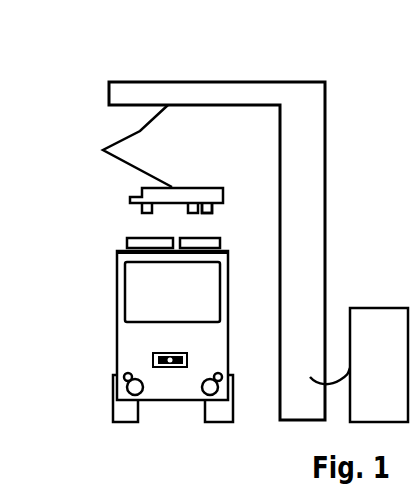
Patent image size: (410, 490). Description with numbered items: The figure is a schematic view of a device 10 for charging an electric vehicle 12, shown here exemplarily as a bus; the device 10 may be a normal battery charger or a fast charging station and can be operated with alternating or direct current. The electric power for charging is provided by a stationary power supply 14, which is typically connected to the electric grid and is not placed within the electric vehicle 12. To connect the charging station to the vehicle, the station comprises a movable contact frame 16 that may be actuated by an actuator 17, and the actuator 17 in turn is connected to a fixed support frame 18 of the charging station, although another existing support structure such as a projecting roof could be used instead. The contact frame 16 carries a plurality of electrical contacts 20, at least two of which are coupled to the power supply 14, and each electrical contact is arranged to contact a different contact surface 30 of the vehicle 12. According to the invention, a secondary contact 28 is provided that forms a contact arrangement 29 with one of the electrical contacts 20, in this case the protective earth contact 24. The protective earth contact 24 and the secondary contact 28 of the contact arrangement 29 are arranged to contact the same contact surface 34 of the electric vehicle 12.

The device for charging an electric vehicle 10 is at (285, 58).
The electric vehicle 12 is at (135, 359).
The stationary power supply 14 is at (373, 326).
The movable contact frame 16 is at (140, 193).
The actuator 17 is at (140, 131).
The fixed support frame 18 is at (299, 367).
The electrical contacts 20 is at (135, 135).
The protective earth contact 24 is at (191, 205).
The secondary contact 28 is at (207, 205).
The contact arrangement 29 is at (223, 211).
The contact surface 30 is at (199, 240).
The contact surface 34 is at (220, 240).